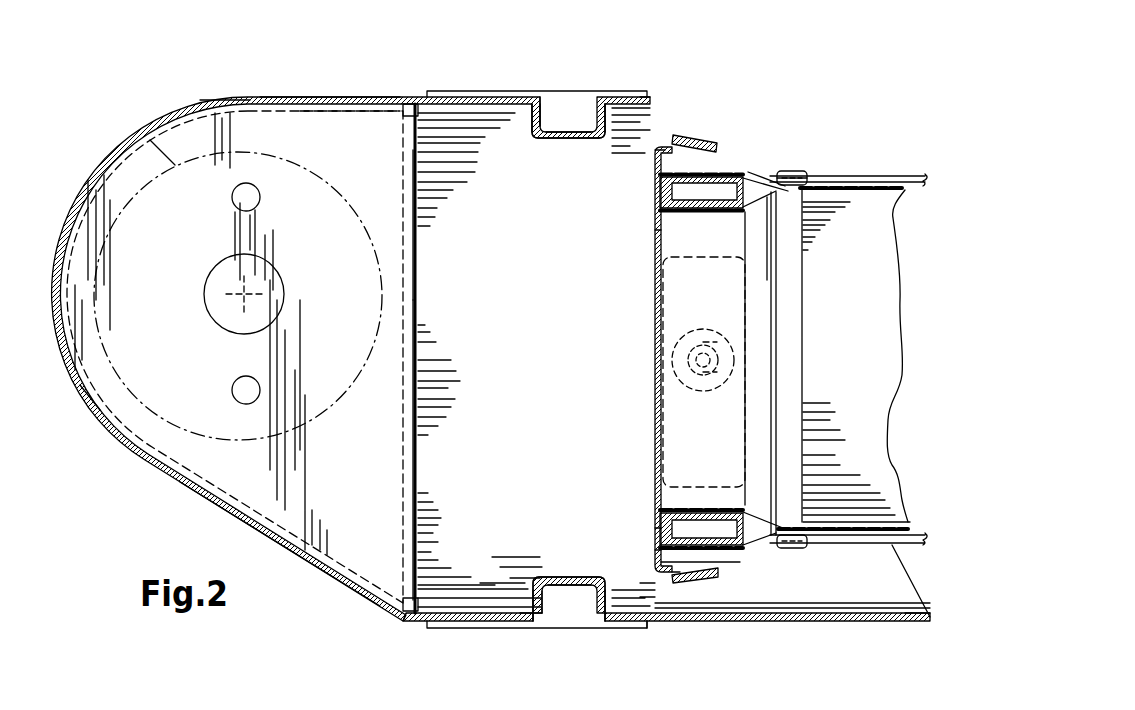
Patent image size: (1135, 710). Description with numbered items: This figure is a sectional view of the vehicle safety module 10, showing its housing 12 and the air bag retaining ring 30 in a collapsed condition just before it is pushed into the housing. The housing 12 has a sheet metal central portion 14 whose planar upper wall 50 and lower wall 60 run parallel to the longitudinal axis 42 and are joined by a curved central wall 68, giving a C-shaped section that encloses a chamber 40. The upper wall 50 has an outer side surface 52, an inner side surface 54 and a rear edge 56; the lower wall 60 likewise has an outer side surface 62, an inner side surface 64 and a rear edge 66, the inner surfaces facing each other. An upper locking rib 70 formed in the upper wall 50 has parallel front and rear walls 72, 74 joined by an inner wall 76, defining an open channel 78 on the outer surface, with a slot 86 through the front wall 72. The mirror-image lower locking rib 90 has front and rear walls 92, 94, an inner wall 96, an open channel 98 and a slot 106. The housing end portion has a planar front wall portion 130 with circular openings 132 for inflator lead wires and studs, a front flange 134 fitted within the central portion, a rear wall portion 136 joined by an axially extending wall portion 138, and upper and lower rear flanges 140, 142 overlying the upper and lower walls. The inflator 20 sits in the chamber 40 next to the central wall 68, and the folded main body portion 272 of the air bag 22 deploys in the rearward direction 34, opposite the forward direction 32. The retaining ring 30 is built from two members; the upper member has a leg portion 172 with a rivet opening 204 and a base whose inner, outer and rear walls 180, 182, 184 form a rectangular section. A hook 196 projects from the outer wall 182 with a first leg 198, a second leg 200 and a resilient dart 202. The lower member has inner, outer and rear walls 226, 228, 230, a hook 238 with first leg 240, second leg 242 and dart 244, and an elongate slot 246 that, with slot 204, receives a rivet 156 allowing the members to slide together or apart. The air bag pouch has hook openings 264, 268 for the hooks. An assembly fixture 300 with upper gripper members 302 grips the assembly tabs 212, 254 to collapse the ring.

The module 10 is at (148, 523).
The housing 12 is at (346, 610).
The central portion 14 is at (302, 561).
The inflator 20 is at (367, 387).
The air bag 22 is at (908, 321).
The air bag retaining ring 30 is at (650, 370).
The arrow indicating forward direction 32 is at (457, 45).
The rearward direction 34 is at (550, 45).
The chamber 40 is at (493, 309).
The axis 42 is at (212, 300).
The upper wall 50 is at (333, 88).
The outer side surface 52 is at (255, 96).
The inner side surface 54 is at (253, 110).
The rear edge 56 is at (683, 172).
The lower wall 60 is at (835, 633).
The outer side surface 62 is at (870, 625).
The inner side surface 64 is at (880, 612).
The rear edge 66 is at (930, 623).
The curved central wall 68 is at (74, 392).
The upper locking rib 70 is at (563, 152).
The front wall 72 is at (533, 130).
The rear wall 74 is at (613, 105).
The inner wall 76 is at (577, 147).
The open channel 78 is at (565, 118).
The elongate slot 86 is at (533, 120).
The lower locking rib 90 is at (550, 566).
The front wall 92 is at (534, 593).
The rear wall 94 is at (633, 613).
The inner wall 96 is at (573, 577).
The open channel 98 is at (577, 603).
The slot 106 is at (532, 598).
The front wall portion 130 is at (163, 152).
The circular openings 132 is at (235, 205).
The outer peripheral front flange 134 is at (340, 112).
The rear wall portion 136 is at (470, 467).
The axially extending wall portion 138 is at (418, 357).
The upper rear flange 140 is at (478, 92).
The lower rear flange 142 is at (470, 633).
The rivet 156 is at (670, 380).
The leg portion 172 is at (660, 300).
The inner wall 180 is at (685, 213).
The outer wall 182 is at (717, 170).
The rear wall 184 is at (760, 180).
The fastener 196 is at (713, 114).
The first leg 198 is at (655, 158).
The second leg 200 is at (723, 147).
The dart 202 is at (673, 140).
The rivet opening 204 is at (717, 342).
The assembly tab 212 is at (775, 173).
The inner wall 226 is at (710, 508).
The outer wall 228 is at (727, 547).
The rear wall 230 is at (767, 527).
The fastener 238 is at (720, 593).
The first leg 240 is at (655, 550).
The second leg 242 is at (687, 577).
The dart 244 is at (687, 583).
The elongate slot 246 is at (717, 372).
The assembly tab 254 is at (768, 547).
The hook openings 264 is at (660, 230).
The hook openings 268 is at (655, 528).
The main body portion 272 is at (897, 197).
The assembly fixture 300 is at (903, 165).
The upper gripper members 302 is at (797, 170).